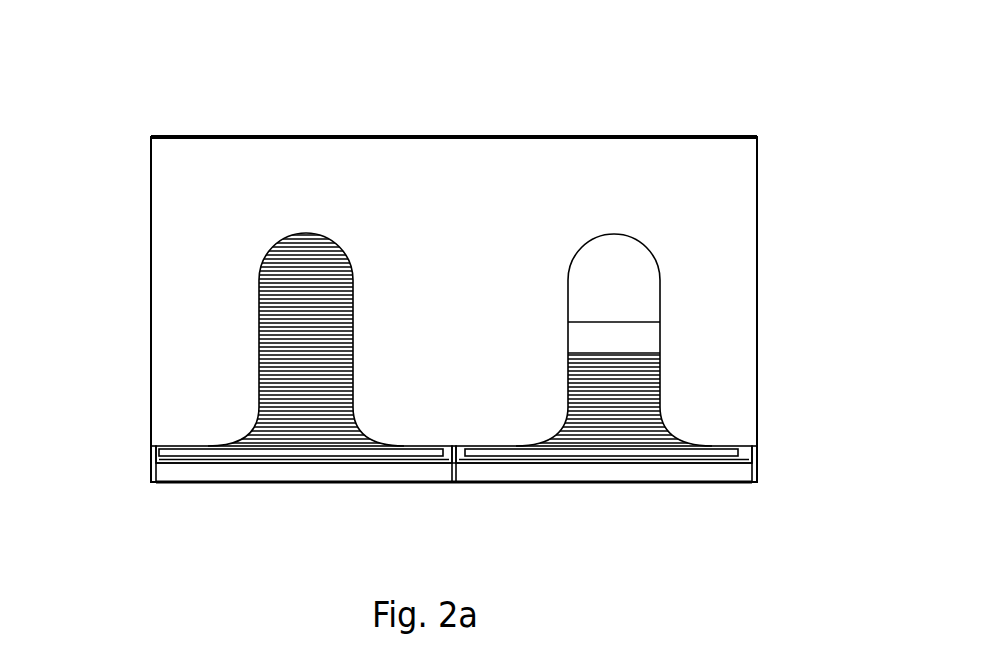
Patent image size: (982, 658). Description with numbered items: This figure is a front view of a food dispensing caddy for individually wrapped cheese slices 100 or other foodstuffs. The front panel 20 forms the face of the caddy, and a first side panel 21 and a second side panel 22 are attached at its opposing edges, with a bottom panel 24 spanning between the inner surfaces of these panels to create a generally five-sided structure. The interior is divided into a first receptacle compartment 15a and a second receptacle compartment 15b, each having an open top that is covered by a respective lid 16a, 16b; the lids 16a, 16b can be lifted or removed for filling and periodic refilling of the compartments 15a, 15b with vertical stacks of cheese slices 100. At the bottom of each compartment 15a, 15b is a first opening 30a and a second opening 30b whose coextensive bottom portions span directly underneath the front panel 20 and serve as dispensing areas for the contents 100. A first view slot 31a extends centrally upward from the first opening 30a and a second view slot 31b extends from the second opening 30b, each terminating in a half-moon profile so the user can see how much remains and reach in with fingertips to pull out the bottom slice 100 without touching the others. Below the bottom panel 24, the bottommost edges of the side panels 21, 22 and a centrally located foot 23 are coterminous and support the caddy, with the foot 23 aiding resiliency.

The front panel 20 is at (197, 206).
The first receptacle compartment 15a is at (244, 126).
The second receptacle compartment 15b is at (626, 126).
The first lid 16a is at (310, 137).
The second lid 16b is at (707, 137).
The first view slot 31a is at (282, 241).
The second view slot 31b is at (615, 235).
The cheese slices 100 is at (290, 341).
The first opening 30a is at (273, 458).
The second opening 30b is at (608, 458).
The foot 23 is at (450, 481).
The first side panel 21 is at (149, 482).
The second side panel 22 is at (748, 482).
The bottom panel 24 is at (656, 458).